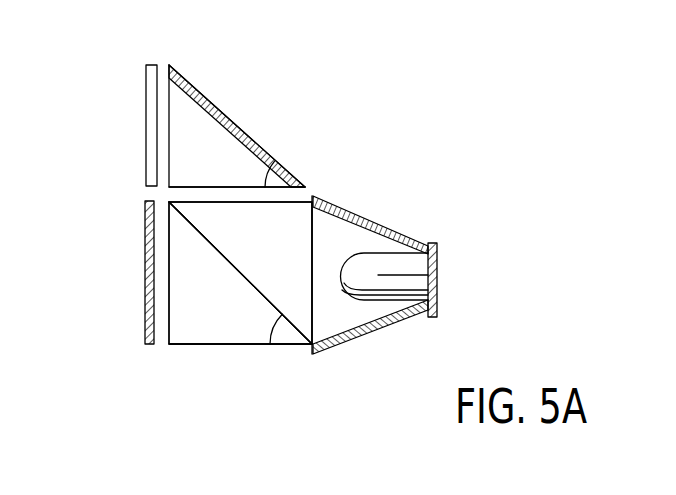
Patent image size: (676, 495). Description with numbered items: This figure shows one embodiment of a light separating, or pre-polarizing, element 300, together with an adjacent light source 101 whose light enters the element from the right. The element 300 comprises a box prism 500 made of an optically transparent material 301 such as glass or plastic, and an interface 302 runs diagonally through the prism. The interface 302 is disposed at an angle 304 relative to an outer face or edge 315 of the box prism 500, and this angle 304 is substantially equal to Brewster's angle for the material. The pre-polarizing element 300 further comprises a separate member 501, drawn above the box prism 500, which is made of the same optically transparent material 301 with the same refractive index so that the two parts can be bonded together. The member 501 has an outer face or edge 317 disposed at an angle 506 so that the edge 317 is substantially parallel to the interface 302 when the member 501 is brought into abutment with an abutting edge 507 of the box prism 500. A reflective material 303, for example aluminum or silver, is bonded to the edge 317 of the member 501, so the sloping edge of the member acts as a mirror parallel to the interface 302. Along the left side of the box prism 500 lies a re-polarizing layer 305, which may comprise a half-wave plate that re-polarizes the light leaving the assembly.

The light source lamp 101 is at (396, 277).
The pre-polarizing element 300 is at (256, 385).
The optically transparent material 301 is at (220, 323).
The interface 302 is at (143, 91).
The reflective material 303 is at (212, 97).
The angle 304 is at (290, 344).
The re-polarizing layer 305 is at (146, 345).
The outer face or edge 315 is at (176, 345).
The outer face or edge 317 is at (237, 169).
The box prism 500 is at (230, 336).
The separate member 501 is at (198, 93).
The angle 506 is at (284, 168).
The abutting edge 507 is at (212, 202).